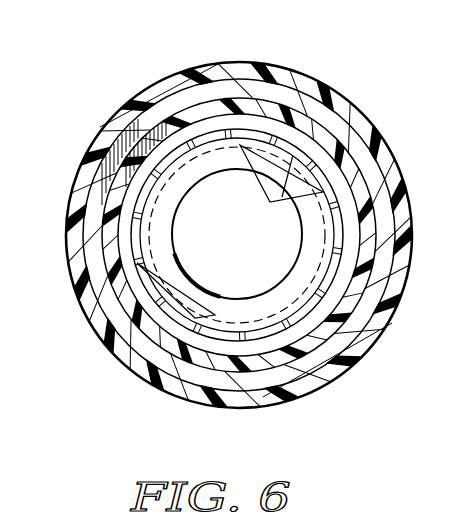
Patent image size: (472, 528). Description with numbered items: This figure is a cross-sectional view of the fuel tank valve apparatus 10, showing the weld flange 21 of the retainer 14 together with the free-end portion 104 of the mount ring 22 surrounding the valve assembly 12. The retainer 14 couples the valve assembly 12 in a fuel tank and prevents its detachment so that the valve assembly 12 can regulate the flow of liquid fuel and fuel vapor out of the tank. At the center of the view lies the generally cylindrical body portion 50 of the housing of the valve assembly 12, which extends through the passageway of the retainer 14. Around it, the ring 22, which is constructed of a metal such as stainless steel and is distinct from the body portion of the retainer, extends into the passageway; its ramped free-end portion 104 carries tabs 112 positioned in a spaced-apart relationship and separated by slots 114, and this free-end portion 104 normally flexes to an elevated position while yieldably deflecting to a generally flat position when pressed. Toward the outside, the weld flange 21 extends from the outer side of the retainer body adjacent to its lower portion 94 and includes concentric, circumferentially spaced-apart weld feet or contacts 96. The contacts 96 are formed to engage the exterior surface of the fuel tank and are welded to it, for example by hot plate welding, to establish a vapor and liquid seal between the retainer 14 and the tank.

The fuel tank valve apparatus 10 is at (88, 116).
The weld flange 21 is at (303, 66).
The contacts 96 is at (342, 109).
The body portion 50 is at (313, 216).
The slots 114 is at (235, 133).
The tabs 112 is at (276, 198).
The valve assembly 12 is at (198, 266).
The mount ring 22 is at (182, 332).
The free-end portion 104 is at (222, 337).
The lower portion 94 is at (295, 334).
The retainer 14 is at (143, 392).